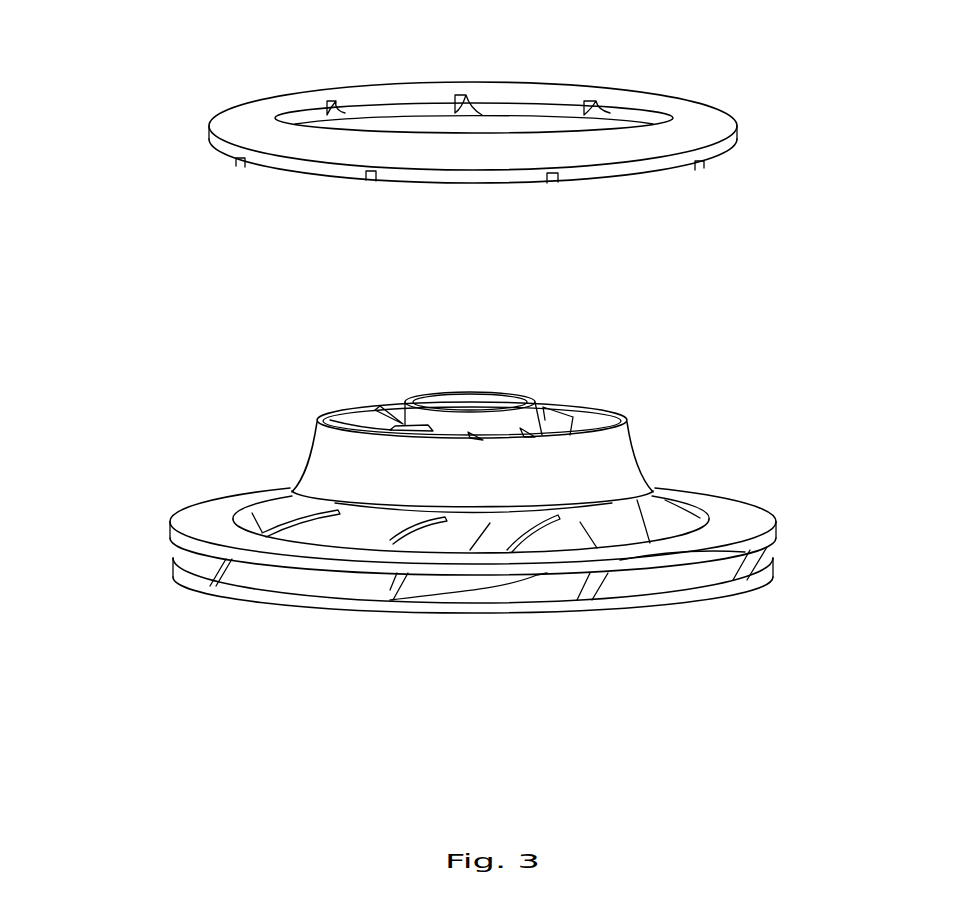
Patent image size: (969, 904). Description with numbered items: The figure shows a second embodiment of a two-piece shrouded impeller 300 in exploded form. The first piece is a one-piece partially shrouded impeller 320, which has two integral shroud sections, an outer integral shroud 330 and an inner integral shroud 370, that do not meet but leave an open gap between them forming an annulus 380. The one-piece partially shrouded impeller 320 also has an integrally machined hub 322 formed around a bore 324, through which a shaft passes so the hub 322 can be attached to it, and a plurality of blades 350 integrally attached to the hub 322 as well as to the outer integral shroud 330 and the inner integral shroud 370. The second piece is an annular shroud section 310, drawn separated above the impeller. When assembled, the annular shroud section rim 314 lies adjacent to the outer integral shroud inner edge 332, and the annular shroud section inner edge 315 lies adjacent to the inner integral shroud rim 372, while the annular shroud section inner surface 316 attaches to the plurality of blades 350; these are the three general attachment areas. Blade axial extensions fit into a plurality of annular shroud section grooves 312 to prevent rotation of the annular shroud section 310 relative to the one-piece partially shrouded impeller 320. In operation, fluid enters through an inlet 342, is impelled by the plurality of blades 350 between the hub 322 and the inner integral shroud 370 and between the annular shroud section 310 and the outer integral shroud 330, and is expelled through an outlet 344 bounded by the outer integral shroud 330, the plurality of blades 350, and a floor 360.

The two-piece shrouded impeller 300 is at (130, 278).
The annular shroud section 310 is at (728, 97).
The annular shroud section grooves 312 is at (552, 185).
The annular shroud section rim 314 is at (718, 158).
The annular shroud section inner edge 315 is at (508, 92).
The annular shroud section inner surface 316 is at (385, 108).
The one-piece partially shrouded impeller 320 is at (728, 352).
The hub 322 is at (425, 400).
The bore 324 is at (520, 403).
The outer integral shroud 330 is at (745, 568).
The outer integral shroud inner edge 332 is at (700, 540).
The inlet 342 is at (355, 413).
The outlet 344 is at (162, 550).
The plurality of blades 350 is at (412, 587).
The floor 360 is at (673, 598).
The inner integral shroud 370 is at (605, 455).
The inner integral shroud rim 372 is at (617, 505).
The annulus 380 is at (244, 483).